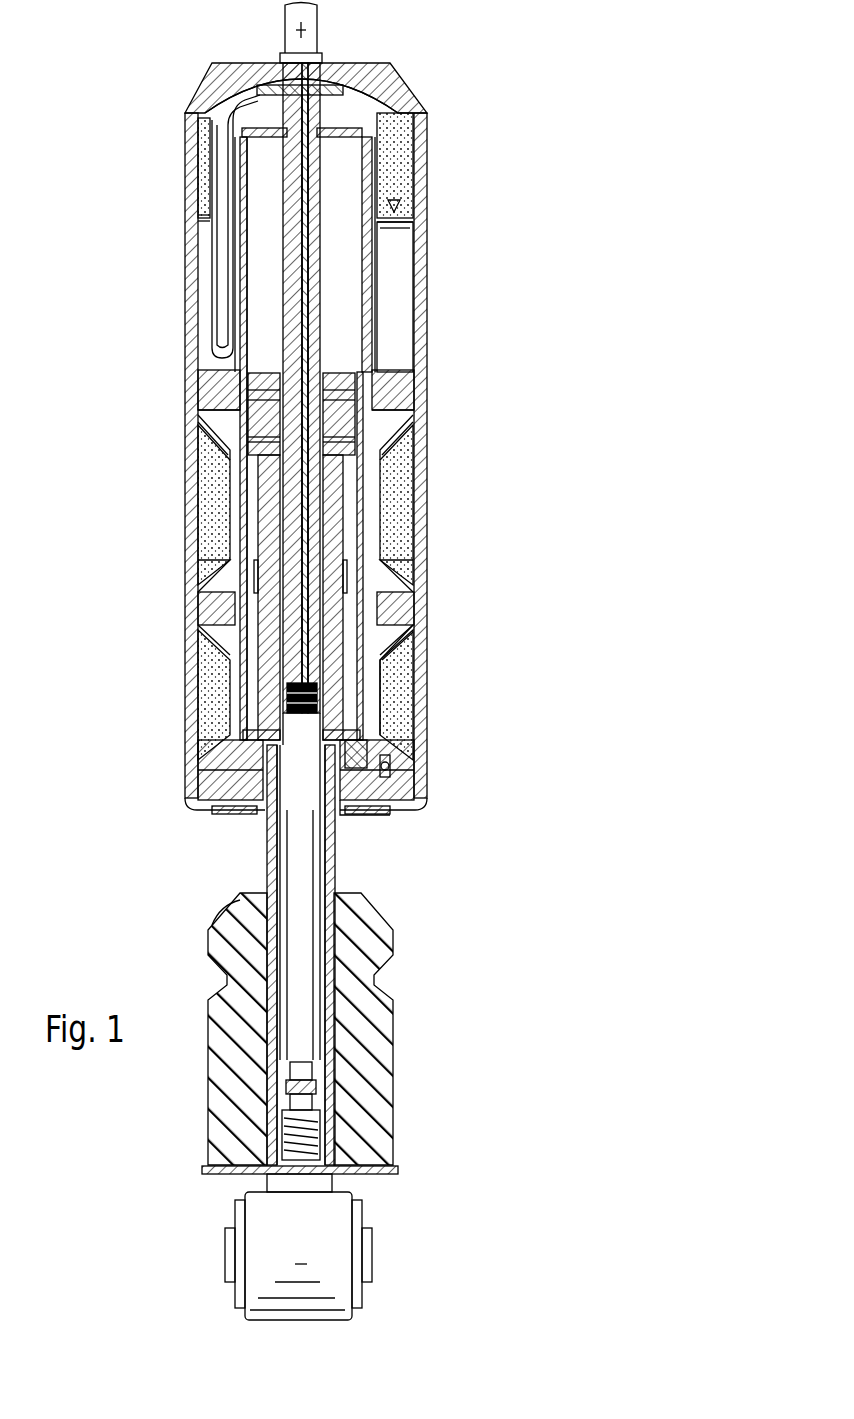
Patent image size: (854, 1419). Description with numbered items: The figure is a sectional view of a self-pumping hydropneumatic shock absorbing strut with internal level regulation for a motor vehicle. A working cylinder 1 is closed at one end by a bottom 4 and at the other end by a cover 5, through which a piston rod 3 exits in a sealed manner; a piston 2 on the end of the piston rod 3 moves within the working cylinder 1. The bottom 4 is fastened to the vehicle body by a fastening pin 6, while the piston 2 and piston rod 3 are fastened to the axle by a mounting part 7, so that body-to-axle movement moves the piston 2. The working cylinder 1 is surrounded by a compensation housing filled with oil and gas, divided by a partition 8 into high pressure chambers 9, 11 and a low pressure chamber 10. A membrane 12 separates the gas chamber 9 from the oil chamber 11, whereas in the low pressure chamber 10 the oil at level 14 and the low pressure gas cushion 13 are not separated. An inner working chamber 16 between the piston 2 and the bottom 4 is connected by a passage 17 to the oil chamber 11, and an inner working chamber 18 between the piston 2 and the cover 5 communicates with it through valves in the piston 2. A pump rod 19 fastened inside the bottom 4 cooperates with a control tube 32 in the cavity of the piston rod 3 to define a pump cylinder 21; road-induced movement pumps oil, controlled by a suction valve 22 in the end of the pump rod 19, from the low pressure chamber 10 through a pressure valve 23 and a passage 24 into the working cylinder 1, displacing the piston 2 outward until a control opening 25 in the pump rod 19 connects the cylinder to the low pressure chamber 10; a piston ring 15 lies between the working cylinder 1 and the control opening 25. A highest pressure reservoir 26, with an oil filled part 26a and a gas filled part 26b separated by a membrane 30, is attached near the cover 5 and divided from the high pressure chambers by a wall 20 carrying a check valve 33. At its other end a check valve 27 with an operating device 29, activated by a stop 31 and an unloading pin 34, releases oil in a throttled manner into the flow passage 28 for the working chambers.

The working cylinder 1 is at (405, 545).
The piston 2 is at (258, 400).
The piston rod 3 is at (338, 858).
The bottom 4 is at (372, 82).
The cover 5 is at (215, 748).
The fastening pin 6 is at (322, 42).
The mounting part 7 is at (364, 1245).
The partition 8 is at (380, 385).
The gas chamber 9 is at (210, 490).
The low pressure chamber 10 is at (398, 281).
The oil chamber 11 is at (225, 568).
The membrane 12 is at (206, 455).
The low pressure gas cushion 13 is at (205, 160).
The oil level 14 is at (395, 200).
The piston ring 15 is at (252, 420).
The inner working chamber 16 is at (243, 150).
The passage 17 is at (378, 260).
The inner working chamber 18 is at (355, 460).
The pump rod 19 is at (366, 165).
The wall 20 is at (215, 605).
The pump cylinder 21 is at (290, 850).
The suction valve 22 is at (320, 697).
The pressure valve 23 is at (316, 1075).
The passage 24 is at (228, 935).
The deregulation or control opening 25 is at (290, 365).
The highest pressure reservoir 26 is at (437, 673).
The oil filled part 26a is at (405, 648).
The gas filled part 26b is at (405, 668).
The check valve 27 is at (385, 788).
The flow passage 28 is at (400, 800).
The operating device 29 is at (395, 818).
The membrane 30 is at (210, 658).
The stop 31 is at (382, 925).
The control tube 32 is at (275, 880).
The check valve 33 is at (395, 605).
The unloading pin 34 is at (345, 800).